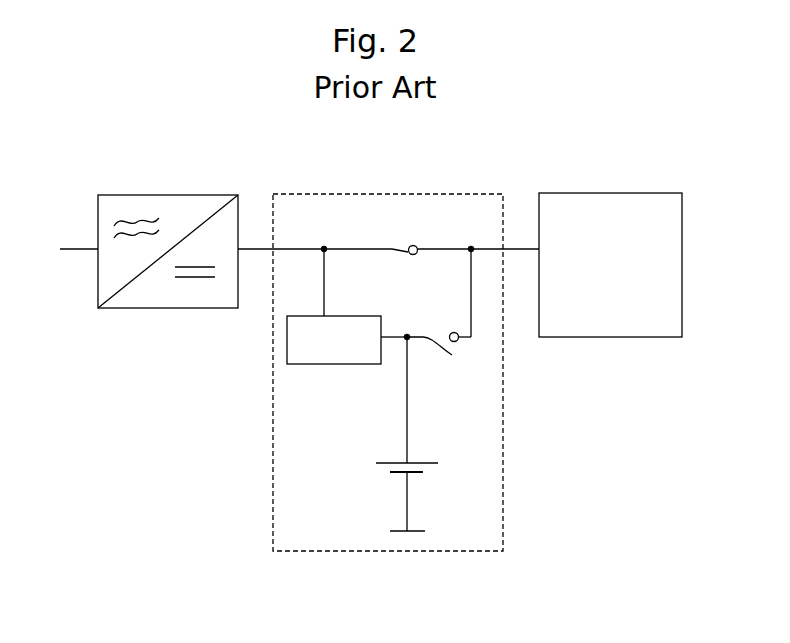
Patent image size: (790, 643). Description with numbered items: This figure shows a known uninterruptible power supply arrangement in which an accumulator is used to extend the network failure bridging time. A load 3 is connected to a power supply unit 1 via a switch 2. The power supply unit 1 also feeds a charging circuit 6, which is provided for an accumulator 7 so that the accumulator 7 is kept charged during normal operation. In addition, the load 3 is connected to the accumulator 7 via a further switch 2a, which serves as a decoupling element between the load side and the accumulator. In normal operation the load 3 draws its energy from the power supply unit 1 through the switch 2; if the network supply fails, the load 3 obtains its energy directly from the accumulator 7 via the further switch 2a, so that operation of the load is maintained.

The power supply unit 1 is at (170, 195).
The switch 2 is at (392, 249).
The further switch 2a is at (446, 357).
The load 3 is at (610, 193).
The charging circuit 6 is at (337, 365).
The accumulator 7 is at (423, 473).